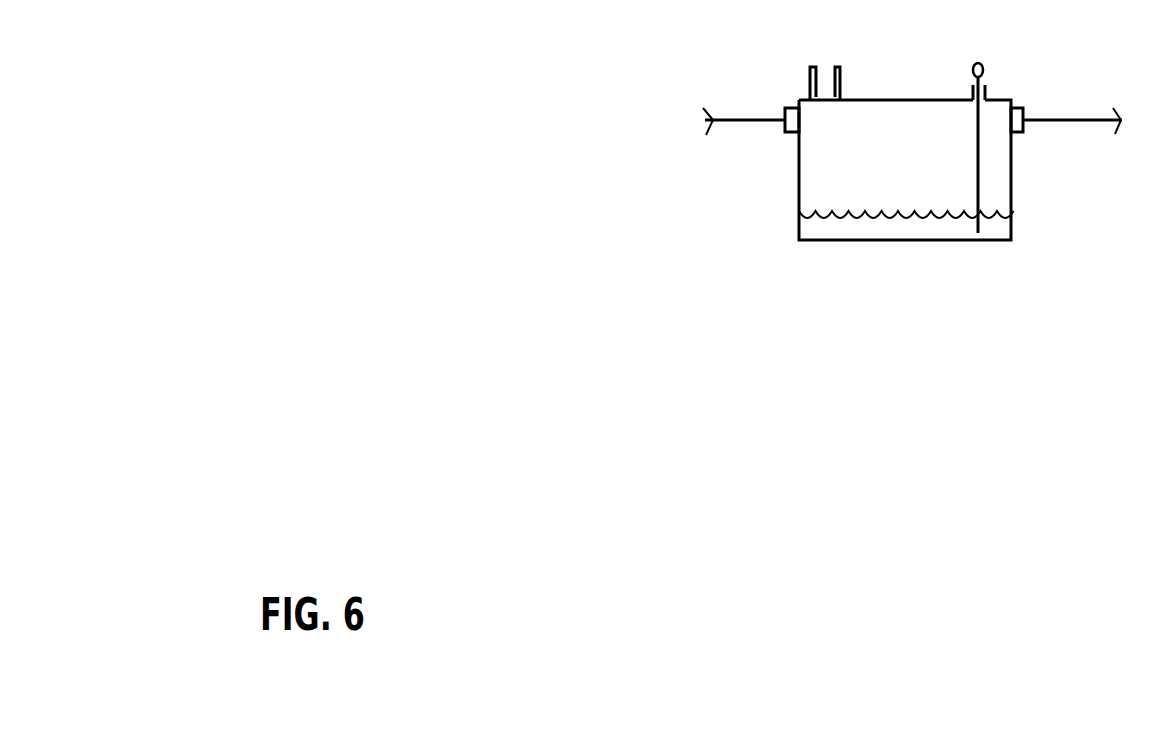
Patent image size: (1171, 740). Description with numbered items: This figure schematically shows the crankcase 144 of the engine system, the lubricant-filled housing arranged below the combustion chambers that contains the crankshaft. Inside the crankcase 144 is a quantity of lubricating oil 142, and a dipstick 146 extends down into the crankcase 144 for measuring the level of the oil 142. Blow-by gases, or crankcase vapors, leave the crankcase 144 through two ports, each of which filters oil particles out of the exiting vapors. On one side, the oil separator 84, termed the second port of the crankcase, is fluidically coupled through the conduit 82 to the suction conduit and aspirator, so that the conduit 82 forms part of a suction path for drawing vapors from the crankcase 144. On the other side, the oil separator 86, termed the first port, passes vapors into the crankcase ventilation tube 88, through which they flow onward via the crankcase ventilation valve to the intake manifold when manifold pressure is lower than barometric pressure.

The conduit 82 is at (738, 118).
The oil separator 84 is at (785, 128).
The oil separator 86 is at (1020, 108).
The crankcase ventilation tube 88 is at (1092, 115).
The lubricating oil 142 is at (900, 234).
The crankcase 144 is at (799, 200).
The dipstick 146 is at (978, 167).